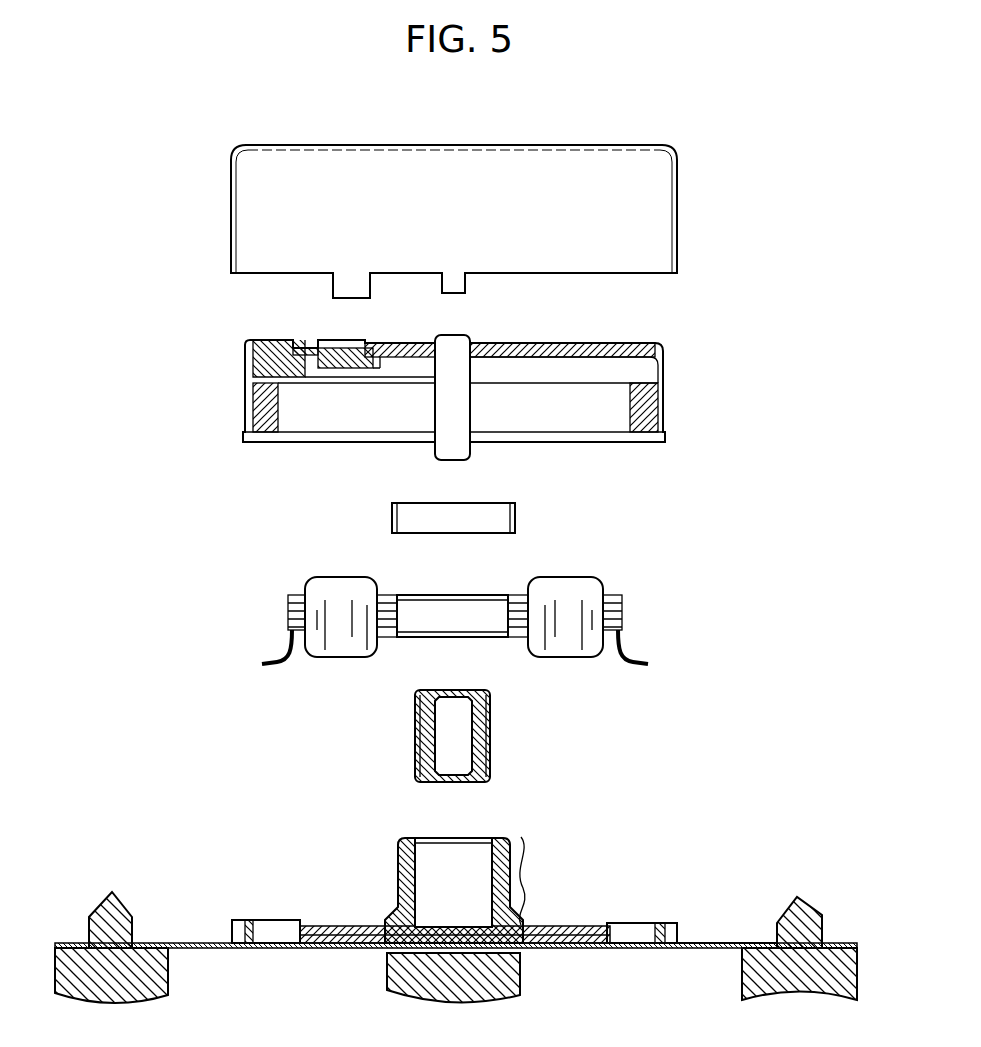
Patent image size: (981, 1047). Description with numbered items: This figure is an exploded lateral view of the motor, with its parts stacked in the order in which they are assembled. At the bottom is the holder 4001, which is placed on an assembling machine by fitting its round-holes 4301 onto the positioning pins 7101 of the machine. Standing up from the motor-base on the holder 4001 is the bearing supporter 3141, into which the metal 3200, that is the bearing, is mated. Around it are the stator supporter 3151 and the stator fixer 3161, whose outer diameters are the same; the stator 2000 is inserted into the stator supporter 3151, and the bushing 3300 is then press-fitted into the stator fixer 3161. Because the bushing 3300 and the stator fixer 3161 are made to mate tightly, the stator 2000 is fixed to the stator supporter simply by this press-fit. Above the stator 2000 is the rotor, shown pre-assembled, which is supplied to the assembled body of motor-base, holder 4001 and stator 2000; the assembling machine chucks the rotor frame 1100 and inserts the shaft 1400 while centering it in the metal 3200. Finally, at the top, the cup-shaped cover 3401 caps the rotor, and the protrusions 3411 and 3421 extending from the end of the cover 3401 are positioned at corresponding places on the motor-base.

The cup-shaped cover 3401 is at (677, 210).
The protrusion 3411 is at (340, 282).
The protrusion 3421 is at (465, 283).
The rotor frame 1100 is at (665, 359).
The shaft 1400 is at (455, 448).
The bushing 3300 is at (518, 518).
The stator 2000 is at (605, 587).
The metal 3200 is at (490, 740).
The bearing supporter 3141 is at (417, 862).
The stator fixer 3161 is at (523, 852).
The stator supporter 3151 is at (530, 890).
The holder 4001 is at (708, 943).
The round-hole 4301 is at (135, 945).
The positioning pin 7101 is at (112, 892).